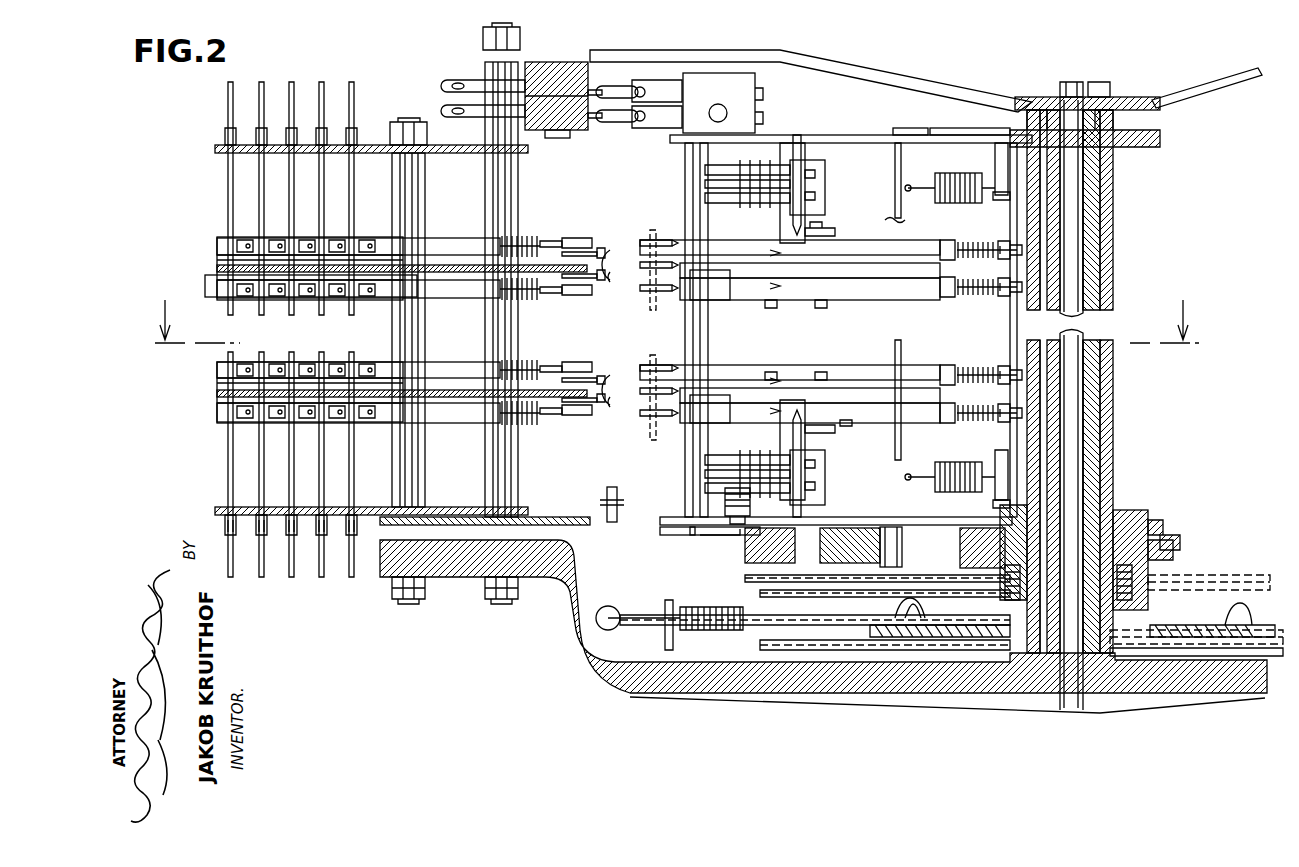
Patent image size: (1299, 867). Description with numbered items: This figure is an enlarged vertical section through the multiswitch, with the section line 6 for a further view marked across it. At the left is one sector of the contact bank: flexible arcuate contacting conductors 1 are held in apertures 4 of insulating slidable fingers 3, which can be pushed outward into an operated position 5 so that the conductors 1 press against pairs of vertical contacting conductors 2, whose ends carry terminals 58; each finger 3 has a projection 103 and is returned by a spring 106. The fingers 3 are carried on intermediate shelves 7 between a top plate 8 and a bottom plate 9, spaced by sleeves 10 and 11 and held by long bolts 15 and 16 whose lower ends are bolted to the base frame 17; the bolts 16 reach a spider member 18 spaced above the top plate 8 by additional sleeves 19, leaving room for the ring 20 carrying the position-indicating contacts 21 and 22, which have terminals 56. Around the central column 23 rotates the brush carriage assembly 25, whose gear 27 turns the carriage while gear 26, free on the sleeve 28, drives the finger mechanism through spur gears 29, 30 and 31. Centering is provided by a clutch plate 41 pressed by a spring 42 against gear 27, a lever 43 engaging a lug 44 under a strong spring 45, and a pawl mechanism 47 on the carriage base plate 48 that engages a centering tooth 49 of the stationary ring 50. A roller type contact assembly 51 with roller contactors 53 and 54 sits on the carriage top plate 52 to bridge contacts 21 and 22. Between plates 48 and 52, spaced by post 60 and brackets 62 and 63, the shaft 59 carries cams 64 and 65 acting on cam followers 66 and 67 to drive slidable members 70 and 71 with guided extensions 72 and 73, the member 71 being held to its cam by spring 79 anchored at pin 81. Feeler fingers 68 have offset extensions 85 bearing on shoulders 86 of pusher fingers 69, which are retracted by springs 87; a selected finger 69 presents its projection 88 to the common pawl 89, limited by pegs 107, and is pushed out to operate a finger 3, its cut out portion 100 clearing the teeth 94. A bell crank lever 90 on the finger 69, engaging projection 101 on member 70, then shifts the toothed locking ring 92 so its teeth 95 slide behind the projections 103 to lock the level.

The arcuate contacting conductors 1 is at (355, 362).
The vertical contacting conductors 2 is at (350, 170).
The slidable finger 3 is at (445, 360).
The apertures 4 is at (350, 245).
The operated position 5 is at (205, 285).
The section line 6 is at (675, 310).
The intermediate shelves 7 is at (217, 262).
The top plate 8 is at (215, 149).
The bottom plate 9 is at (215, 510).
The sleeve 10 is at (418, 168).
The sleeve 11 is at (510, 168).
The long bolt 15 is at (405, 120).
The long bolt 16 is at (512, 23).
The base frame 17 is at (382, 565).
The spider member 18 is at (722, 50).
The additional sleeves 19 is at (485, 134).
The ring 20 is at (562, 138).
The contact segment 21 is at (595, 90).
The contact segment 22 is at (596, 118).
The central shaft 23 is at (1070, 222).
The brush carriage assembly 25 is at (822, 134).
The gear 26 is at (1270, 580).
The gear 27 is at (1275, 650).
The sleeve 28 is at (1125, 530).
The spur gear 29 is at (1172, 540).
The spur gear 30 is at (960, 545).
The spur gear 31 is at (796, 550).
The clutch plate 41 is at (1258, 630).
The spring 42 is at (1000, 602).
The lever 43 is at (790, 618).
The lug 44 is at (618, 612).
The strong spring 45 is at (698, 607).
The pawl mechanism 47 is at (722, 512).
The base plate 48 is at (680, 535).
The centering teeth 49 is at (610, 522).
The ring 50 is at (570, 517).
The roller type contact assembly 51 is at (765, 102).
The top plate 52 is at (948, 130).
The roller type contactor 53 is at (612, 90).
The roller type contactor 54 is at (618, 122).
The terminals 56 is at (447, 108).
The terminals 58 is at (351, 82).
The shaft 59 is at (772, 310).
The post 60 is at (698, 180).
The bracket 62 is at (886, 201).
The bracket 63 is at (715, 302).
The cam 64 is at (815, 174).
The cam 65 is at (815, 196).
The cam follower 66 is at (705, 175).
The cam follower 67 is at (700, 245).
The feeler finger 68 is at (940, 362).
The pusher finger 69 is at (822, 310).
The slidable member 70 is at (665, 230).
The slidable member 71 is at (940, 205).
The extension 72 is at (903, 128).
The extension 73 is at (715, 535).
The spring 79 is at (995, 198).
The pin 81 is at (995, 150).
The offset extension 85 is at (950, 240).
The shoulder 86 is at (935, 290).
The spring 87 is at (1000, 242).
The projection 88 is at (780, 282).
The common pawl 89 is at (810, 232).
The bell crank lever 90 is at (608, 285).
The toothed locking ring 92 is at (578, 240).
The teeth 94 is at (598, 290).
The teeth 95 is at (555, 241).
The cut out portion 100 is at (660, 245).
The projection 101 is at (650, 235).
The projection 103 is at (570, 238).
The spring 106 is at (510, 235).
The pegs 107 is at (793, 220).